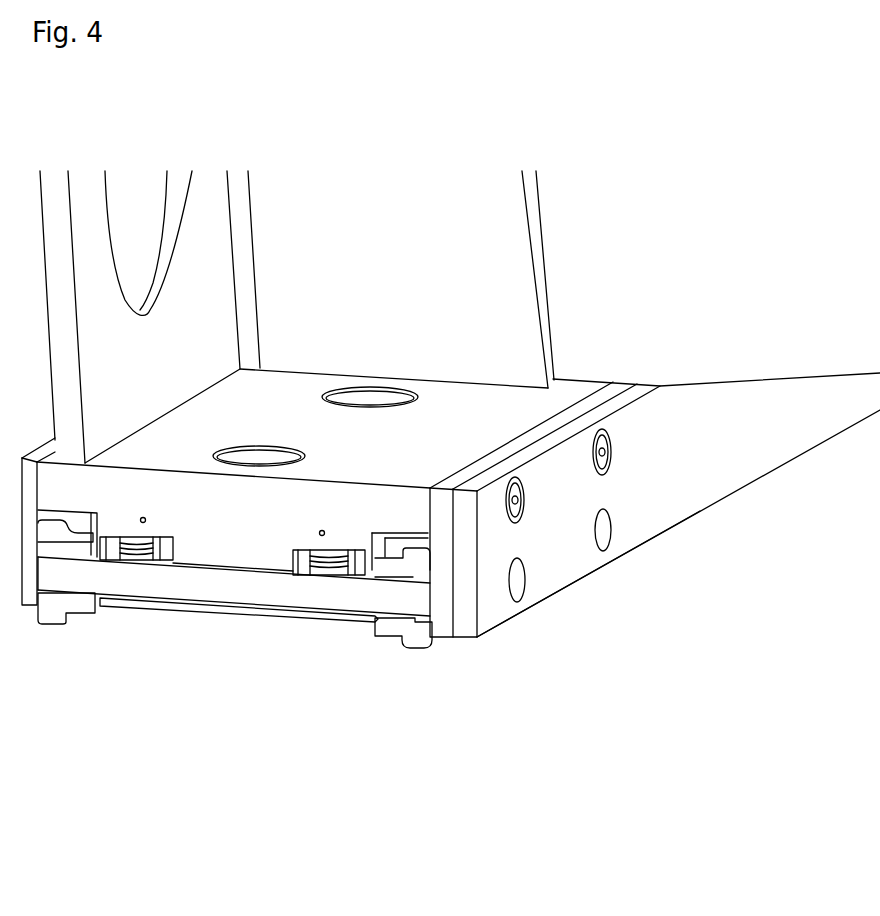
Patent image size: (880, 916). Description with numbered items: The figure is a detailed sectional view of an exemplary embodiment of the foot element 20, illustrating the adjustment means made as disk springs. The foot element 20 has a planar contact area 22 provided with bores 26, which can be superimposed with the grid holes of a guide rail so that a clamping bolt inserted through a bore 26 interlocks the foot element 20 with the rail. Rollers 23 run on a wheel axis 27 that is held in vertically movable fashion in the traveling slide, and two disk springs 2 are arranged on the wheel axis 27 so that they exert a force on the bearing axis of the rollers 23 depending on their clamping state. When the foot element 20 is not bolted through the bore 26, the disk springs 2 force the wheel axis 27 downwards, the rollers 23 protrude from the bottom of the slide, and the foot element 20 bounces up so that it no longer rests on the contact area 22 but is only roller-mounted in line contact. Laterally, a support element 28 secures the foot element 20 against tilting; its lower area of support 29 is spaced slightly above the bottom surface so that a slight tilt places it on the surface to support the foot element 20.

The disk spring 2 is at (163, 550).
The foot element 20 is at (432, 893).
The contact area 22 is at (192, 615).
The roller 23 is at (48, 615).
The bore 26 is at (368, 400).
The wheel axis 27 is at (233, 590).
The support element 28 is at (748, 473).
The lower area of support 29 is at (678, 527).